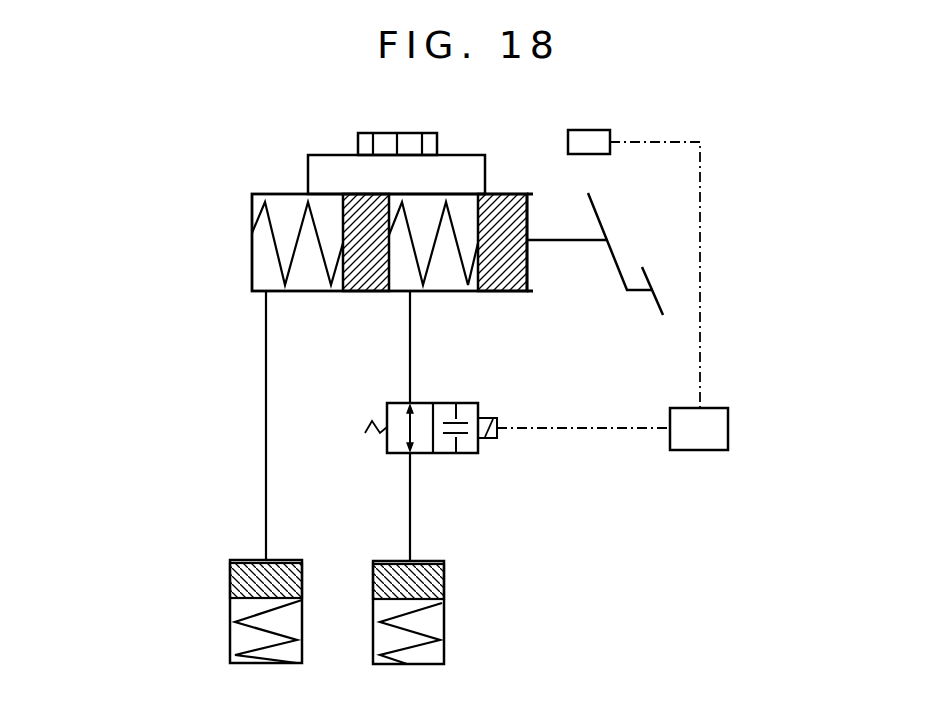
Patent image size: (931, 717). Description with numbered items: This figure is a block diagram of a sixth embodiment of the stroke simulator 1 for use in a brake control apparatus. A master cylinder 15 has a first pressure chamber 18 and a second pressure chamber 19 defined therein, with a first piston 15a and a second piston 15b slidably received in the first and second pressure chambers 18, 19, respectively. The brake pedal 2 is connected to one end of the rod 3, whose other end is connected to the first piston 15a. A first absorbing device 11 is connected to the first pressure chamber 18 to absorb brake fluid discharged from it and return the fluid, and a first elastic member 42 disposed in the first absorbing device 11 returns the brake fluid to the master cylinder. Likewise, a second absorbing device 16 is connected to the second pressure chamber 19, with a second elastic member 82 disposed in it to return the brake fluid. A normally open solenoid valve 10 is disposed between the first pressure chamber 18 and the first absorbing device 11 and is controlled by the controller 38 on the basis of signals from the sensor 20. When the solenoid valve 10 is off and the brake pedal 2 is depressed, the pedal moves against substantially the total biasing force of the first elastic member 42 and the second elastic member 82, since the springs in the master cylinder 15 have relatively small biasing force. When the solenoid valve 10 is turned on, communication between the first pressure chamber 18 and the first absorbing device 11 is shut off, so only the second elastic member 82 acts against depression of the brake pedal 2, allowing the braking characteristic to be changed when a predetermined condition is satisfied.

The stroke simulator 1 is at (498, 135).
The brake pedal 2 is at (650, 297).
The rod 3 is at (565, 240).
The solenoid valve 10 is at (425, 455).
The first absorbing device 11 is at (458, 610).
The master cylinder 15 is at (263, 183).
The first piston 15a is at (502, 295).
The second piston 15b is at (365, 295).
The second absorbing device 16 is at (210, 607).
The first pressure chamber 18 is at (440, 277).
The second pressure chamber 19 is at (312, 277).
The sensor 20 is at (606, 130).
The controller 38 is at (712, 412).
The first elastic member 42 is at (427, 647).
The second elastic member 82 is at (287, 647).